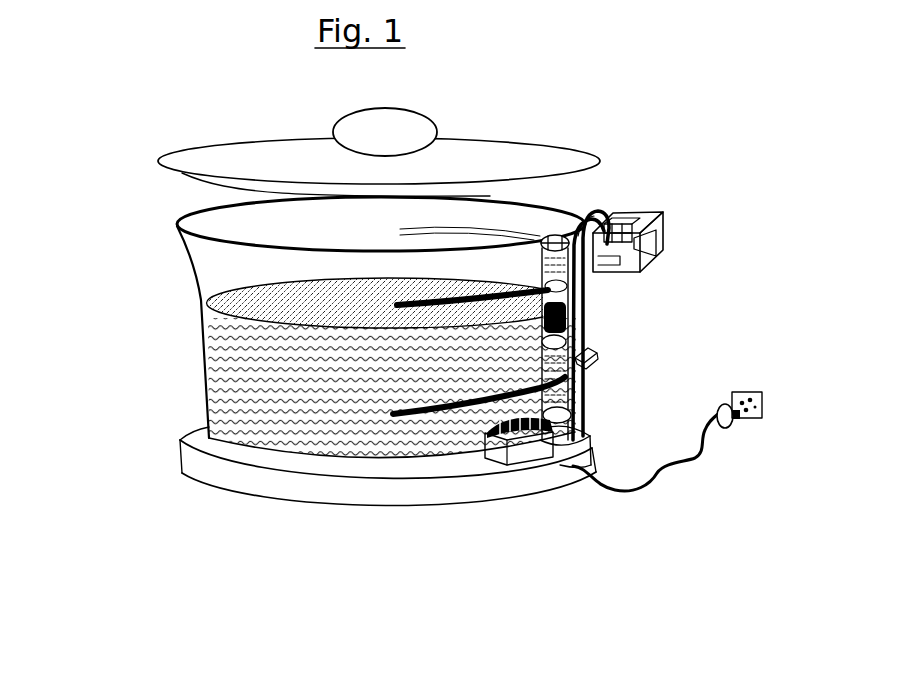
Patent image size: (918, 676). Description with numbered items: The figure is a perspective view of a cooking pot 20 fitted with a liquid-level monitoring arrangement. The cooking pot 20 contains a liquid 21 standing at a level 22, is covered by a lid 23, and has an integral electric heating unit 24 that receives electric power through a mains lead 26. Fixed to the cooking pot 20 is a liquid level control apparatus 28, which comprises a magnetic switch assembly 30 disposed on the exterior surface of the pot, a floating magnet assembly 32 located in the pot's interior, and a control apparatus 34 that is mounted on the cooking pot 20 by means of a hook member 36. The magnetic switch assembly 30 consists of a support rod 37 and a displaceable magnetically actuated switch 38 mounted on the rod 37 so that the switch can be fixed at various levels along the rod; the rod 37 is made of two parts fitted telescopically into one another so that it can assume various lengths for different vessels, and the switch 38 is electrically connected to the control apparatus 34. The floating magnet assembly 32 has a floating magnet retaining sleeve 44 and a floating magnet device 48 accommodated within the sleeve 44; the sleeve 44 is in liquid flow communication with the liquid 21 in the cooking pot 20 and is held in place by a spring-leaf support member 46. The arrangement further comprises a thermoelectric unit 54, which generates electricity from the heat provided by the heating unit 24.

The cooking pot 20 is at (192, 347).
The liquid 21 is at (228, 385).
The level 22 is at (275, 297).
The lid 23 is at (220, 153).
The integral electric heating unit 24 is at (345, 490).
The mains lead 26 is at (712, 448).
The liquid level control apparatus 28 is at (674, 268).
The magnetic switch assembly 30 is at (612, 323).
The floating magnet assembly 32 is at (527, 256).
The control apparatus 34 is at (686, 211).
The hook member 36 is at (606, 208).
The support rod 37 is at (583, 393).
The magnetically actuated switch 38 is at (600, 352).
The floating magnet retaining sleeve 44 is at (545, 367).
The spring-leaf support member 46 is at (430, 292).
The floating magnet device 48 is at (540, 321).
The thermoelectric unit 54 is at (538, 466).